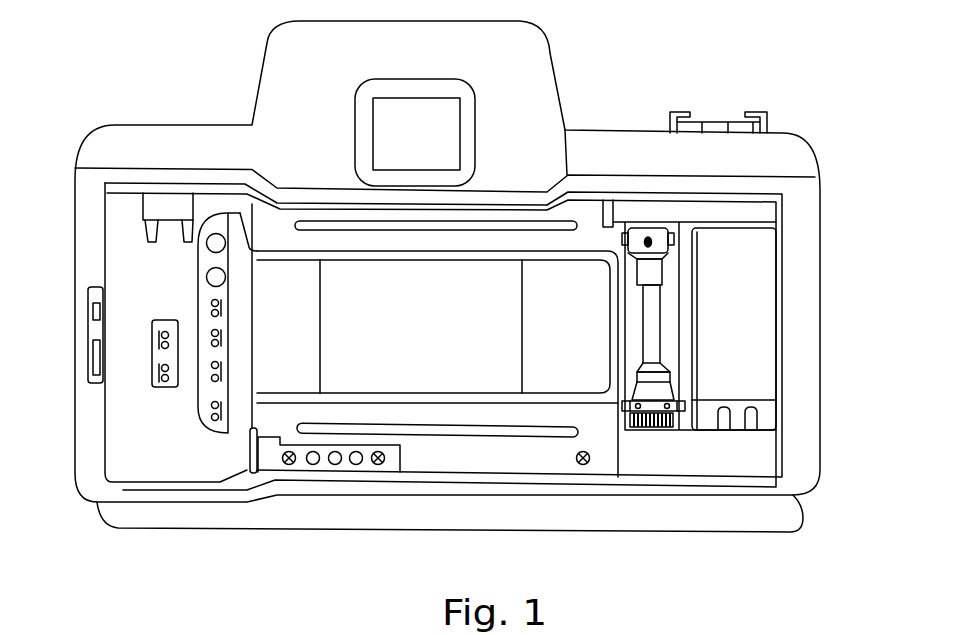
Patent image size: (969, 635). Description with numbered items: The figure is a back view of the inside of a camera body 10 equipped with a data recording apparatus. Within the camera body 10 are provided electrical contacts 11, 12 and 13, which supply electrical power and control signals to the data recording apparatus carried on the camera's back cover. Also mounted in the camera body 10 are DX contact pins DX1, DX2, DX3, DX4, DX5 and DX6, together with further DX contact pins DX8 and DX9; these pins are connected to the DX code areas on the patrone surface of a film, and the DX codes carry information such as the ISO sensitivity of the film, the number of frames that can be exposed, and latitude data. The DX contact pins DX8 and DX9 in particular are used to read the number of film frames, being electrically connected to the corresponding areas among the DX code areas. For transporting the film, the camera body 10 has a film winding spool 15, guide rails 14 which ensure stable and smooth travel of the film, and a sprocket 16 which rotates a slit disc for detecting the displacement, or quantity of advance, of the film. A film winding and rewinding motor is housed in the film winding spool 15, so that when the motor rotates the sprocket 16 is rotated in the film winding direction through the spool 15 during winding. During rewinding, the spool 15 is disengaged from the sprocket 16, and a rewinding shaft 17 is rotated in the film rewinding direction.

The camera body 10 is at (793, 163).
The electrical contact 11 is at (313, 465).
The electrical contact 12 is at (335, 465).
The electrical contact 13 is at (357, 465).
The guide rails 14 is at (572, 222).
The film winding spool 15 is at (760, 366).
The sprocket 16 is at (653, 325).
The rewinding shaft 17 is at (155, 213).
The DX contact pin DX1 is at (224, 407).
The DX contact pin DX2 is at (224, 370).
The DX contact pin DX3 is at (223, 337).
The DX contact pin DX4 is at (224, 308).
The DX contact pin DX5 is at (207, 278).
The DX contact pin DX6 is at (207, 249).
The DX contact pin DX8 is at (157, 375).
The DX contact pin DX9 is at (157, 338).